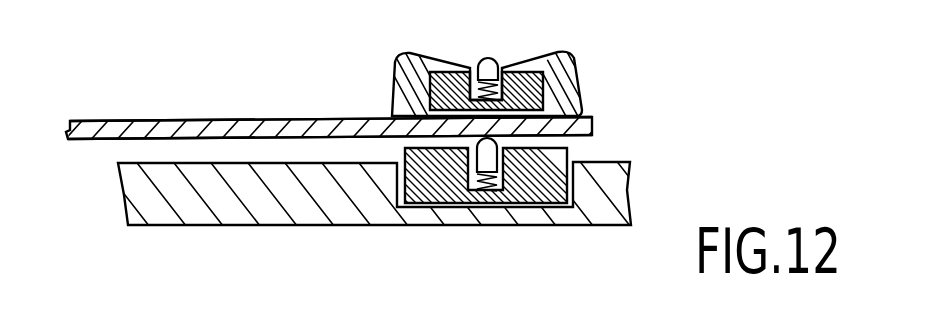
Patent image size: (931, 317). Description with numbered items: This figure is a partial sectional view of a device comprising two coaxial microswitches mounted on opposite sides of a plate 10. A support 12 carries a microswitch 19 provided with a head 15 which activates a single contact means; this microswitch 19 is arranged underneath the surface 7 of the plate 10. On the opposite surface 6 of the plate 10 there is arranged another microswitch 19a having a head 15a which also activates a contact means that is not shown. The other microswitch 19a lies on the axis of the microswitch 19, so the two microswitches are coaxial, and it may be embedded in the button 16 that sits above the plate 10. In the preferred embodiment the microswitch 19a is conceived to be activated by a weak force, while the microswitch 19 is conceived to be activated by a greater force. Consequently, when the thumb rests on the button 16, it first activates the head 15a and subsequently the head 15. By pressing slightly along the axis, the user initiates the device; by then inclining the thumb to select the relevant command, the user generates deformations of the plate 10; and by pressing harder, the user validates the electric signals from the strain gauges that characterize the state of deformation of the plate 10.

The opposite surface 6 is at (224, 114).
The surface 7 is at (110, 142).
The plate 10 is at (123, 121).
The support 12 is at (193, 225).
The head 15 is at (486, 152).
The head 15a is at (489, 62).
The button 16 is at (392, 86).
The microswitch 19 is at (533, 188).
The other microswitch 19a is at (453, 72).